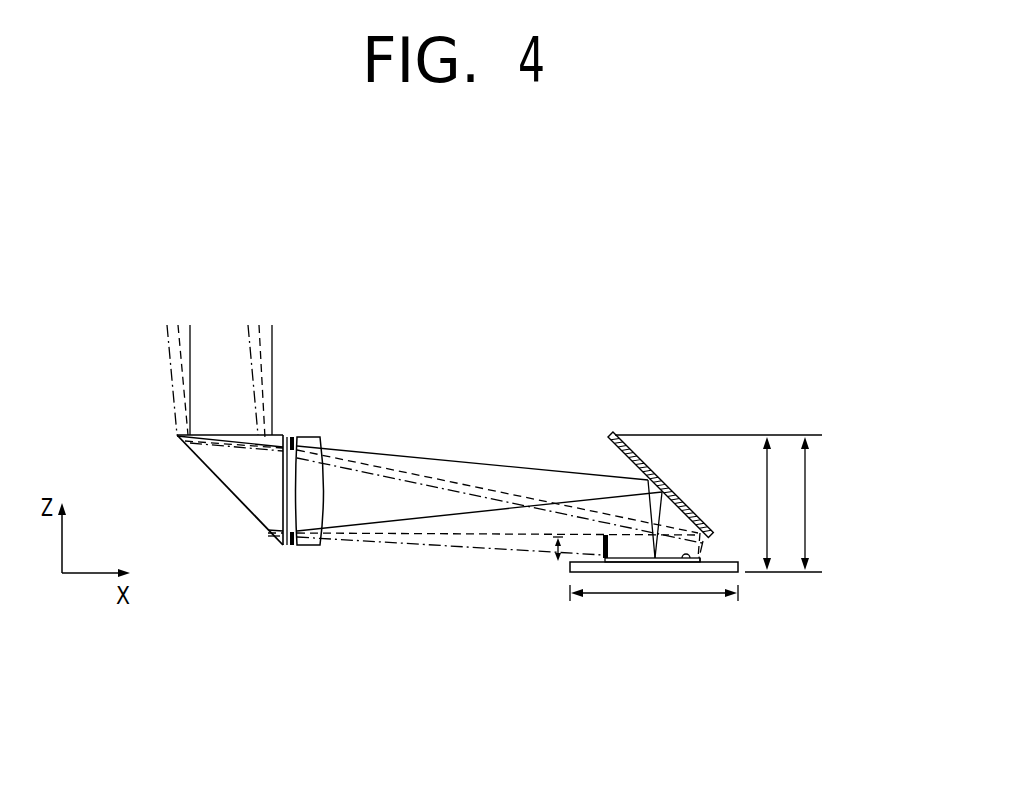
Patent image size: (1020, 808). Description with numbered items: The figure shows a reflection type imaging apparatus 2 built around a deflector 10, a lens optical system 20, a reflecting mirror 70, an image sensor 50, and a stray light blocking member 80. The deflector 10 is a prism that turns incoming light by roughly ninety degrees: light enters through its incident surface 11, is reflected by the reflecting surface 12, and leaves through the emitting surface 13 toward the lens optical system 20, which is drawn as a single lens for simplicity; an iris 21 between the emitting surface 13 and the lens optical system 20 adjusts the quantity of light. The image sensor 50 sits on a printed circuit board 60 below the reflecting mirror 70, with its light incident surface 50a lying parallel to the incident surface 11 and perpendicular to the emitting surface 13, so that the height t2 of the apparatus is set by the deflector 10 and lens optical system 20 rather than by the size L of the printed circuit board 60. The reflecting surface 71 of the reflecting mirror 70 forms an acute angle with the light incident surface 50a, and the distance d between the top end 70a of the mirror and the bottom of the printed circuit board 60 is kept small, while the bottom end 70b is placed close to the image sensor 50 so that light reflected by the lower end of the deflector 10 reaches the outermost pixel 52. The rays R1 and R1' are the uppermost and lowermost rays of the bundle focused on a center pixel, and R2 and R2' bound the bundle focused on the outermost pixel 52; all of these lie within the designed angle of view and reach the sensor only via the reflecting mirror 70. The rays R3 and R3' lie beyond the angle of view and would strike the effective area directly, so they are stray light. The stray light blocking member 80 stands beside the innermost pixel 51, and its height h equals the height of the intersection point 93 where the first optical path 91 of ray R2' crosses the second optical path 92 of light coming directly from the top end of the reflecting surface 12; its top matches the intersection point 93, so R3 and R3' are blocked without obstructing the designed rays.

The reflection type imaging apparatus 2 is at (470, 305).
The deflector 10 is at (237, 490).
The incident surface 11 is at (212, 436).
The reflecting surface 12 is at (212, 478).
The emitting surface 13 is at (287, 505).
The lens optical system 20 is at (332, 474).
The iris 21 is at (292, 436).
The image sensor 50 is at (670, 604).
The light incident surface 50a is at (697, 562).
The innermost pixel 51 is at (606, 562).
The outermost pixel 52 is at (705, 566).
The printed circuit board 60 is at (673, 585).
The reflecting mirror 70 is at (687, 496).
The top end 70a is at (608, 433).
The bottom end 70b is at (712, 540).
The reflecting surface 71 is at (607, 440).
The stray light blocking member 80 is at (585, 556).
The first optical path 91 is at (438, 538).
The second optical path 92 is at (373, 478).
The intersection point 93 is at (567, 560).
The uppermost ray of center light ray bundle R1 is at (412, 437).
The uppermost ray of outermost light ray bundle R2 is at (441, 467).
The uppermost ray of stray light bundle R3 is at (446, 473).
The lowermost ray of center light ray bundle R1' is at (465, 542).
The lowermost ray of outermost light ray bundle R2' is at (484, 563).
The lowermost ray of stray light bundle R3' is at (435, 568).
The distance d is at (718, 503).
The height t2 is at (817, 503).
The height of intersection point h is at (551, 551).
The size of printed circuit board L is at (654, 605).